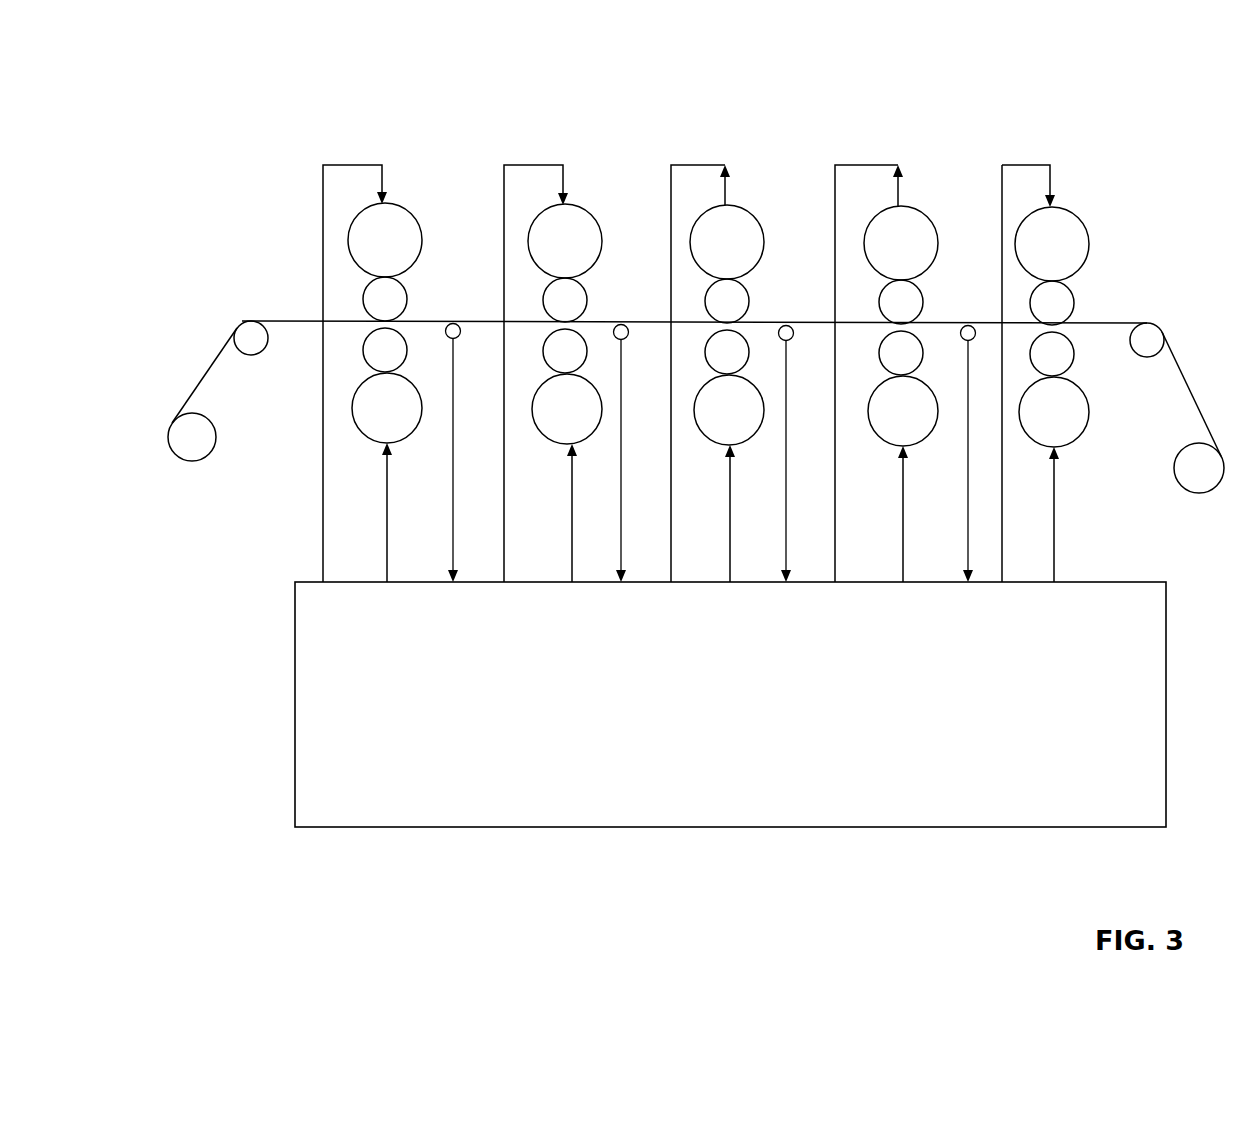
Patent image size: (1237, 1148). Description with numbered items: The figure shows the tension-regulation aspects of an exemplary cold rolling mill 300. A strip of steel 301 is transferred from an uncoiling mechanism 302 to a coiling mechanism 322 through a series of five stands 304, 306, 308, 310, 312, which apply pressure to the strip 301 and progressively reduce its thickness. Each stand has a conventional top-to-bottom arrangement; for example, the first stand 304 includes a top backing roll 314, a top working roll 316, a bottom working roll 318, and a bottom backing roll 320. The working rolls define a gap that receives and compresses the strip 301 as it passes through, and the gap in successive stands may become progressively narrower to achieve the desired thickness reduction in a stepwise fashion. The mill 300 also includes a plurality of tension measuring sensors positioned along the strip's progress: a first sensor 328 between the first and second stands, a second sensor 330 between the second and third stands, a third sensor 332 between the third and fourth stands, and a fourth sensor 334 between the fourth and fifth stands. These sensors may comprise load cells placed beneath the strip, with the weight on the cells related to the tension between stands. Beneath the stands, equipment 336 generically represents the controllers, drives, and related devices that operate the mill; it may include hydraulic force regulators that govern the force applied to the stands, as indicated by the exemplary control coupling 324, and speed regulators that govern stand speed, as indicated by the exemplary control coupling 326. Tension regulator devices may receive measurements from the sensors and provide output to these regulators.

The mill 300 is at (869, 68).
The strip of steel 301 is at (210, 365).
The uncoiling mechanism 302 is at (217, 435).
The stand 304 is at (346, 373).
The stand 306 is at (633, 190).
The stand 308 is at (776, 190).
The stand 310 is at (956, 191).
The stand 312 is at (1096, 326).
The top backing roll 314 is at (348, 240).
The top working roll 316 is at (363, 301).
The bottom working roll 318 is at (363, 352).
The bottom backing roll 320 is at (352, 408).
The coiling mechanism 322 is at (1213, 492).
The control coupling 324 is at (1013, 167).
The control coupling 326 is at (1119, 514).
The first sensor 328 is at (452, 323).
The second sensor 330 is at (620, 324).
The third sensor 332 is at (786, 325).
The fourth sensor 334 is at (968, 325).
The equipment 336 is at (1166, 703).